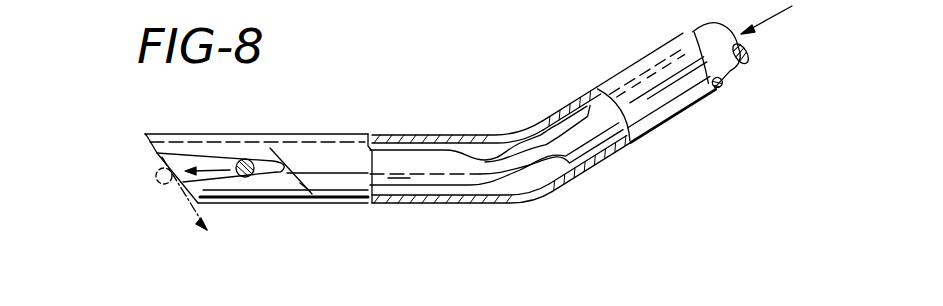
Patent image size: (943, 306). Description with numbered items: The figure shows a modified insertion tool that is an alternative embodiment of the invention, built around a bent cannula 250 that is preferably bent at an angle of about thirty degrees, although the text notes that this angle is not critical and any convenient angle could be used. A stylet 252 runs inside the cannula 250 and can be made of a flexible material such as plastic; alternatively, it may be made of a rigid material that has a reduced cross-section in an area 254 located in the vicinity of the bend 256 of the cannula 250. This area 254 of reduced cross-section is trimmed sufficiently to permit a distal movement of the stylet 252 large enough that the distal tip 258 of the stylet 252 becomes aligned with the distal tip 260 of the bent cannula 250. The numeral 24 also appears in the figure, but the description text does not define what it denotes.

The pin / pivot 24 is at (264, 160).
The bent cannula 250 is at (540, 118).
The stylet 252 is at (428, 165).
The area of reduced cross-section 254 is at (557, 160).
The bend 256 is at (522, 204).
The distal tip of stylet 258 is at (302, 197).
The distal tip 260 is at (147, 139).